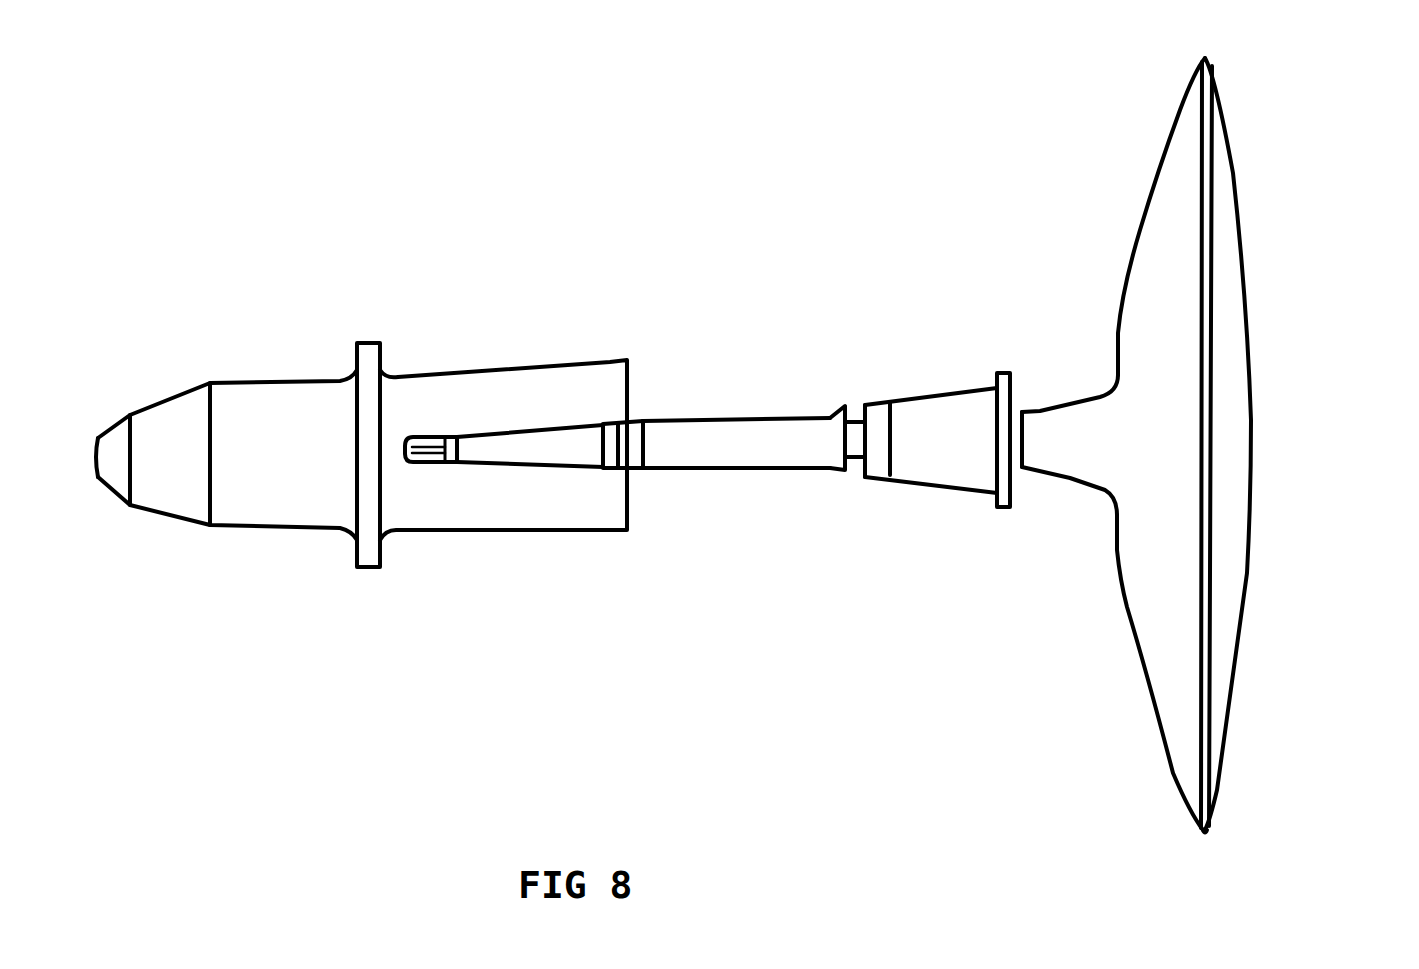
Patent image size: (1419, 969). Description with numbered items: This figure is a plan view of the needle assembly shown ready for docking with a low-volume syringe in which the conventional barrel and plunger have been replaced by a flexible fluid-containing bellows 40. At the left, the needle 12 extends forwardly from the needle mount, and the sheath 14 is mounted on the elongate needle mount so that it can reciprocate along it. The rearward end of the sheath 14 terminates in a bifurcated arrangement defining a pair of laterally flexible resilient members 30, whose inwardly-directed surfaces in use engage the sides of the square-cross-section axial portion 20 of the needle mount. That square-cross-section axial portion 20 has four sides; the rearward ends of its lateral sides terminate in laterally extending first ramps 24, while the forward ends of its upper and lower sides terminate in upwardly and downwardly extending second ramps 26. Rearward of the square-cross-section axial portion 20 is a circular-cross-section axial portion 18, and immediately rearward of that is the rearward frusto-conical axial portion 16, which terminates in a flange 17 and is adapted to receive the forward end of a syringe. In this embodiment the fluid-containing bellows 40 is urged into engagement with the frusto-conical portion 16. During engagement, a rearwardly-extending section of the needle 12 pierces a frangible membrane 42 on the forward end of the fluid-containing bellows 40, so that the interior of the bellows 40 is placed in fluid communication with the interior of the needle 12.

The needle 12 is at (432, 465).
The sheath 14 is at (273, 387).
The rearward frusto-conical axial portion 16 is at (920, 413).
The flange 17 is at (1010, 373).
The circular-cross-section axial portion 18 is at (852, 415).
The square-cross-section axial portion 20 is at (713, 447).
The first ramps 24 is at (838, 478).
The second ramps 26 is at (628, 453).
The resilient members 30 is at (620, 360).
The fluid-containing bellows 40 is at (1223, 370).
The frangible membrane 42 is at (1028, 442).